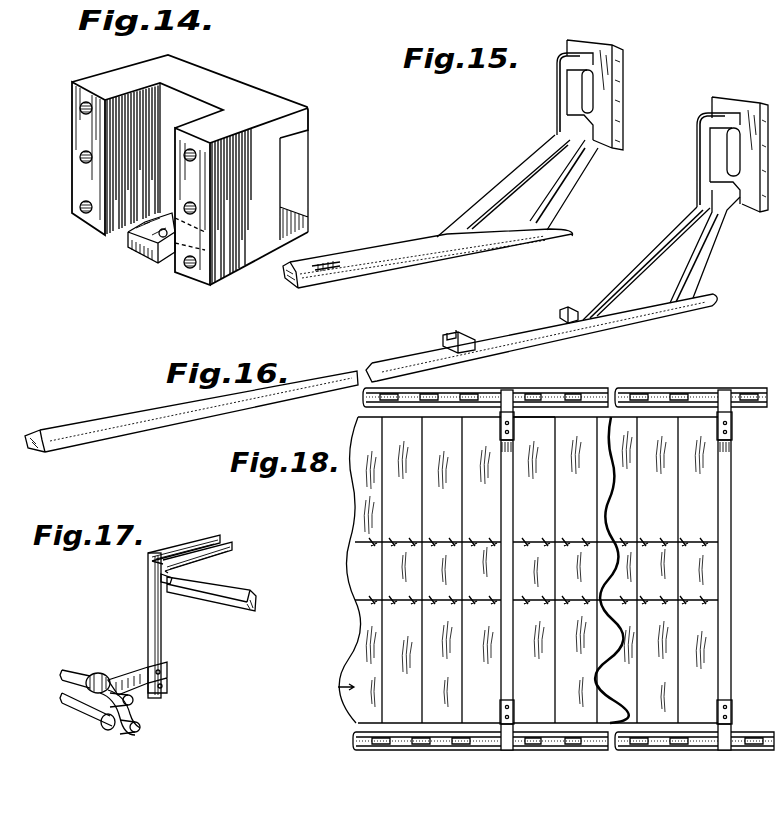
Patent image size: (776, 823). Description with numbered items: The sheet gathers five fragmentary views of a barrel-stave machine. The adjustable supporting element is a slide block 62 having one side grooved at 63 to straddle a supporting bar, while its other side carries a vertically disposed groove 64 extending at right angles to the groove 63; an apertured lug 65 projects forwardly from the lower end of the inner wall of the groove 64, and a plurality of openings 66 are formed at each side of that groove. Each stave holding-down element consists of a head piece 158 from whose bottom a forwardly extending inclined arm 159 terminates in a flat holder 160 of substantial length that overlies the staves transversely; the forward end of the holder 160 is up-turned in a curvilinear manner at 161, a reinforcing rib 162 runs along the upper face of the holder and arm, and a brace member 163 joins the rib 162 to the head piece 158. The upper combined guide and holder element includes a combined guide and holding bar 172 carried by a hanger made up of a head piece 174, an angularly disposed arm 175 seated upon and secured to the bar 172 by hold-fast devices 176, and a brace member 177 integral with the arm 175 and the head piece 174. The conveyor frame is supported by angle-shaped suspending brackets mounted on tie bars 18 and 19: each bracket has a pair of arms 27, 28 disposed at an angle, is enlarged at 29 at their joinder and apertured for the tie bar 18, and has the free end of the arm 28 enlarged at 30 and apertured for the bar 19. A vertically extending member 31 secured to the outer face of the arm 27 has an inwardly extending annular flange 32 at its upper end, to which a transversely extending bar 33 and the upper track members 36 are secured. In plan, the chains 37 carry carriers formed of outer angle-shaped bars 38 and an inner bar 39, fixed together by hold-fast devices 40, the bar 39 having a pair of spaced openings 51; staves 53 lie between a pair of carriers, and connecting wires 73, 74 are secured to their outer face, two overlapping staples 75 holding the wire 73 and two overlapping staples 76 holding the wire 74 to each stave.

In FIG. 14, the slide block 62 is at (117, 78).
In FIG. 14, the groove 63 is at (282, 194).
In FIG. 14, the vertically disposed groove 64 is at (190, 113).
In FIG. 14, the apertured lug 65 is at (153, 238).
In FIG. 14, the openings 66 is at (80, 207).
In FIG. 15, the head piece 158 is at (612, 97).
In FIG. 15, the inclined arm 159 is at (575, 186).
In FIG. 15, the flat holder 160 is at (395, 268).
In FIG. 15, the up-turned forward end 161 is at (310, 282).
In FIG. 15, the reinforcing rib 162 is at (425, 238).
In FIG. 15, the brace member 163 is at (520, 152).
In FIG. 15, the combined guide and holding bar 172 is at (395, 352).
In FIG. 16, the combined guide and holding bar 172 is at (112, 428).
In FIG. 15, the head piece 174 is at (745, 86).
In FIG. 15, the angularly disposed arm 175 is at (700, 260).
In FIG. 15, the hold-fast devices 176 is at (462, 336).
In FIG. 15, the brace member 177 is at (657, 240).
In FIG. 17, the tie bar 18 is at (62, 676).
In FIG. 17, the tie bar 19 is at (62, 700).
In FIG. 17, the arm 27 is at (130, 672).
In FIG. 17, the arm 28 is at (134, 703).
In FIG. 17, the enlarged portion 29 is at (105, 672).
In FIG. 17, the enlarged free end 30 is at (134, 733).
In FIG. 17, the vertically extending member 31 is at (148, 618).
In FIG. 17, the annular flange 32 is at (170, 584).
In FIG. 17, the transversely extending bar 33 is at (243, 594).
In FIG. 17, the upper track members 36 is at (188, 556).
In FIG. 18, the upper track members 36 is at (363, 398).
In FIG. 18, the chains 37 is at (484, 391).
In FIG. 18, the angle-shaped bar 38 is at (514, 416).
In FIG. 18, the bar 39 is at (731, 497).
In FIG. 18, the hold-fast devices 40 is at (514, 425).
In FIG. 18, the spaced openings 51 is at (505, 598).
In FIG. 18, the staves 53 is at (358, 578).
In FIG. 18, the connecting wire 73 is at (528, 546).
In FIG. 18, the connecting wire 74 is at (540, 595).
In FIG. 18, the staples 75 is at (520, 540).
In FIG. 18, the staples 76 is at (525, 604).